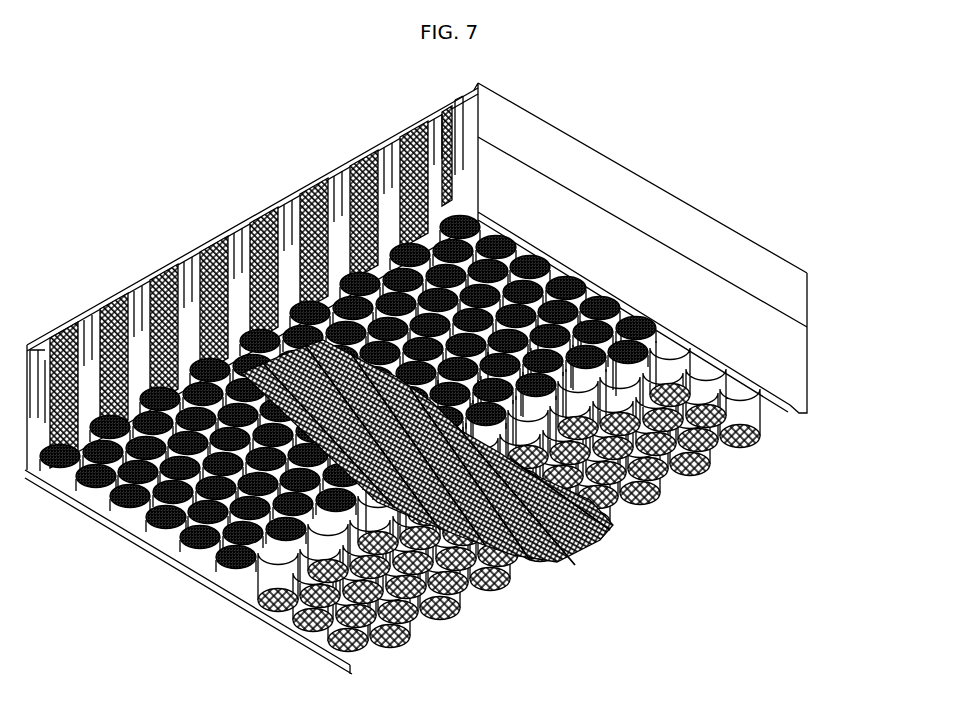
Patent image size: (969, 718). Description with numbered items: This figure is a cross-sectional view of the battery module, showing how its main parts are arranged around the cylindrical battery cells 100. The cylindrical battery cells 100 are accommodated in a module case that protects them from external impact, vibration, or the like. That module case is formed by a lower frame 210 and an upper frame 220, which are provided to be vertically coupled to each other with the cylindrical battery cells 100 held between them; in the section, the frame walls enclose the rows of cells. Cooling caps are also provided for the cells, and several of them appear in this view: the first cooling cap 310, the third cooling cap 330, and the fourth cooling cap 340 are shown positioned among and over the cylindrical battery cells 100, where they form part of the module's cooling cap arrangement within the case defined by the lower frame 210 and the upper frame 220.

The cylindrical battery cells 100 is at (116, 322).
The lower frame 210 is at (805, 354).
The upper frame 220 is at (805, 298).
The first cooling cap 310 is at (224, 292).
The third cooling cap 330 is at (72, 338).
The fourth cooling cap 340 is at (696, 472).